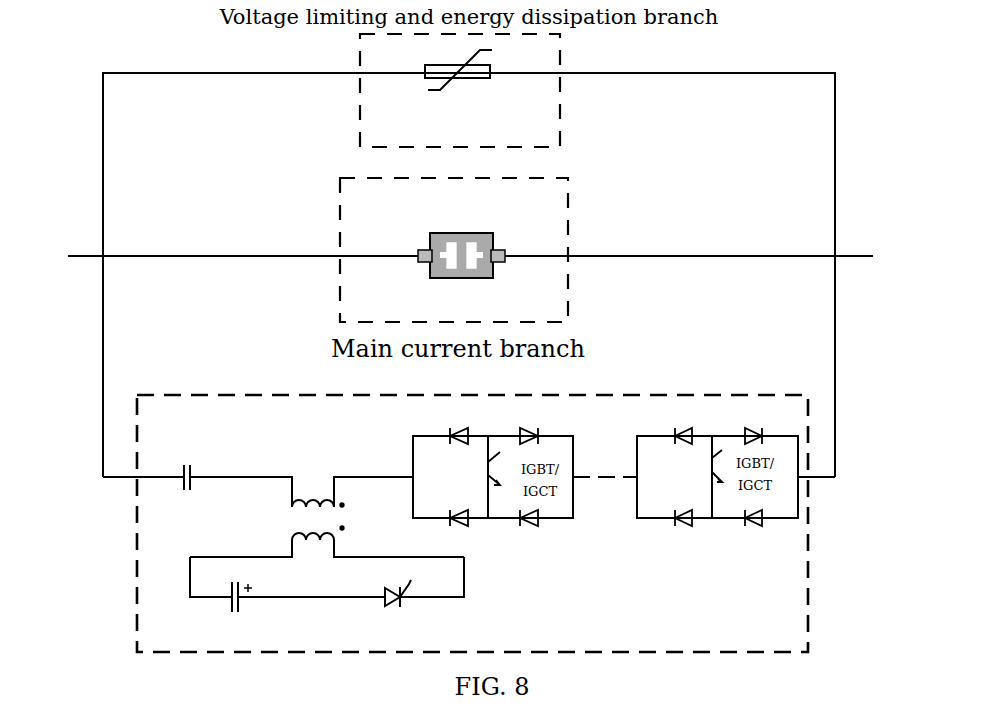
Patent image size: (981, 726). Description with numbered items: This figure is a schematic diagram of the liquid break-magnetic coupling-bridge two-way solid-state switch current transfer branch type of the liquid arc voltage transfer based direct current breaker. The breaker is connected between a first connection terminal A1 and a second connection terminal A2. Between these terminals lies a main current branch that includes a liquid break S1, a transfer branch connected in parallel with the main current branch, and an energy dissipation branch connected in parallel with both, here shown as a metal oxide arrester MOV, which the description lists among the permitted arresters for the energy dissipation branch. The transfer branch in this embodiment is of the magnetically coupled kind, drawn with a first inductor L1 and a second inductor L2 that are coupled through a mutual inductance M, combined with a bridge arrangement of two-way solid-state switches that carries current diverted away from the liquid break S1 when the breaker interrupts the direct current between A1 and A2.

The first terminal A1 is at (48, 257).
The second terminal A2 is at (893, 258).
The metal oxide varistor MOV is at (460, 90).
The liquid break switch S1 is at (454, 250).
The first inductor L1 is at (337, 494).
The second inductor L2 is at (327, 542).
The mutual inductance M is at (358, 517).